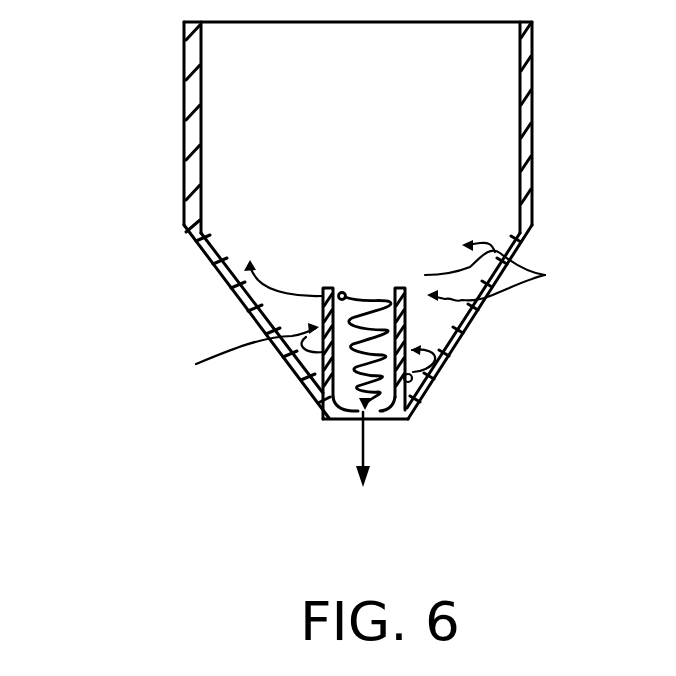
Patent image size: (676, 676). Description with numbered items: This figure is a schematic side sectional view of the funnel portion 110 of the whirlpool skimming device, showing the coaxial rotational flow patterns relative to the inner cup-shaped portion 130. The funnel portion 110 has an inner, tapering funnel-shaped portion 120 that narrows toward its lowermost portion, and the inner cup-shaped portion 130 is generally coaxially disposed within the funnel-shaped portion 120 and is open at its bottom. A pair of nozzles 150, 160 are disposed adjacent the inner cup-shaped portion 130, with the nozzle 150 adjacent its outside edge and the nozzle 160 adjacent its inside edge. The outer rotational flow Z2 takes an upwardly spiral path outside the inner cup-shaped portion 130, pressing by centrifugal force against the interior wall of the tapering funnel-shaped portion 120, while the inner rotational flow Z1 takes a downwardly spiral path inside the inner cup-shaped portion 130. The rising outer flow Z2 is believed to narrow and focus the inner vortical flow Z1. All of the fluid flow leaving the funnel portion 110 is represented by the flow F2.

The funnel portion 110 is at (186, 108).
The inner, tapering funnel-shaped portion 120 is at (212, 262).
The inner cup-shaped portion 130 is at (405, 320).
The nozzle 150 is at (425, 368).
The nozzle 160 is at (343, 293).
The inner rotational flow Z1 is at (325, 372).
The outer rotational flow Z2 is at (253, 292).
The flow F2 is at (371, 473).